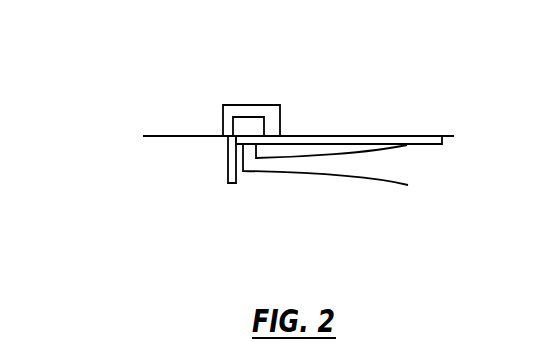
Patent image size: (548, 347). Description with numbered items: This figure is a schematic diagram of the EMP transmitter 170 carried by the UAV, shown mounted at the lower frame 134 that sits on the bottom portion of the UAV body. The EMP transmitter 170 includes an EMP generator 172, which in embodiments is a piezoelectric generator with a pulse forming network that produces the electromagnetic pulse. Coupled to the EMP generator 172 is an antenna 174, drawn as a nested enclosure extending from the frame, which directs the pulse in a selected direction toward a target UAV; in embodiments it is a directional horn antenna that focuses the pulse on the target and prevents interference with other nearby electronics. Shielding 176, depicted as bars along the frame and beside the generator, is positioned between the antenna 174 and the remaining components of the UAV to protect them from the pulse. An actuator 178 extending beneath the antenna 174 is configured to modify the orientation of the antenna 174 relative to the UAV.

The lower frame 134 is at (183, 135).
The EMP transmitter 170 is at (315, 78).
The EMP generator 172 is at (250, 120).
The antenna 174 is at (268, 108).
The shielding 176 is at (348, 138).
The actuator 178 is at (358, 172).